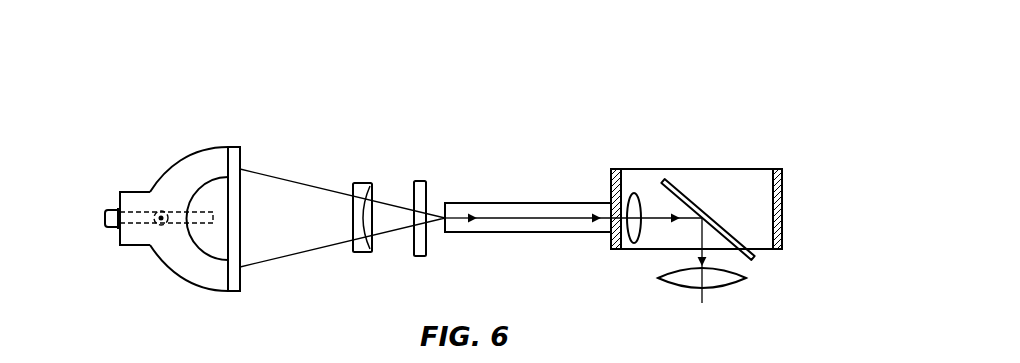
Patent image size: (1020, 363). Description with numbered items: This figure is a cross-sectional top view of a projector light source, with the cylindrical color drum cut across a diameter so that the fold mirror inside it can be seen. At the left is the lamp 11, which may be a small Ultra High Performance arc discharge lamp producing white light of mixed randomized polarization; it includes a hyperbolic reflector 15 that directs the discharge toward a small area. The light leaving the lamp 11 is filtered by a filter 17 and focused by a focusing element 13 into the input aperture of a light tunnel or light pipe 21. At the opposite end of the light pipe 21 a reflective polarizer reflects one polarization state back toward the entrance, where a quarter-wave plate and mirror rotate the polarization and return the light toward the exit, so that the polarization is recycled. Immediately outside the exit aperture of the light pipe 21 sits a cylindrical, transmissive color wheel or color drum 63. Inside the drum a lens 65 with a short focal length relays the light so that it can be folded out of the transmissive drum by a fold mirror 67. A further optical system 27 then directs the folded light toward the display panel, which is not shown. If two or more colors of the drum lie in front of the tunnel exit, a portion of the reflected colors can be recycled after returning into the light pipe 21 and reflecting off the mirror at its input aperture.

The lamp 11 is at (170, 218).
The hyperbolic reflector 15 is at (182, 162).
The focusing element 13 is at (365, 183).
The filter 17 is at (420, 181).
The light pipe 21 is at (518, 203).
The color drum 63 is at (782, 192).
The lens 65 is at (640, 248).
The fold mirror 67 is at (686, 192).
The optical system 27 is at (731, 285).